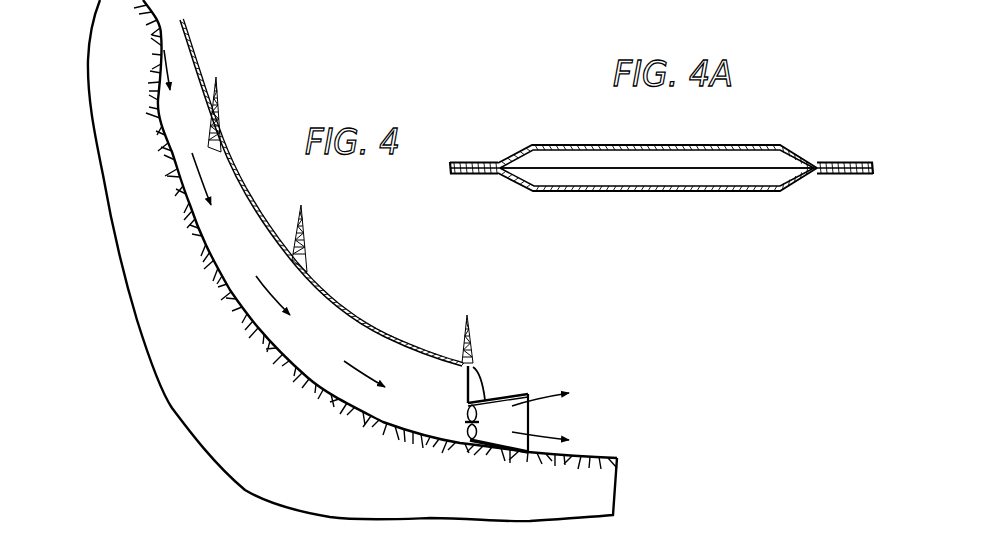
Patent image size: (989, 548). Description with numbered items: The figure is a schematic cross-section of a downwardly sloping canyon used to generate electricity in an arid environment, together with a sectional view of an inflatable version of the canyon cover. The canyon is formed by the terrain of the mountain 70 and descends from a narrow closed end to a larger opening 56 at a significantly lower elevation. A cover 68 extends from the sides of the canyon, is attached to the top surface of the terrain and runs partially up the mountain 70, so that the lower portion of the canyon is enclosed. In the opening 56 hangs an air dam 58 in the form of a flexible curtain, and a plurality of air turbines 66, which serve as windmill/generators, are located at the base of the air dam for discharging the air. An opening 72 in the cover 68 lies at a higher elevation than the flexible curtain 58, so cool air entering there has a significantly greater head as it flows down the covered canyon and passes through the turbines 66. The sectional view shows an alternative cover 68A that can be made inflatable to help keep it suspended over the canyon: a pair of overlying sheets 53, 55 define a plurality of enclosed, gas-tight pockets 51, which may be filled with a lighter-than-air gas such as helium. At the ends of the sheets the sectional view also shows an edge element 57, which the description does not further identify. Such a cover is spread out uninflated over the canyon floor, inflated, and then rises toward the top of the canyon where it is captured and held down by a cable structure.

In FIG. 4, the mountain 70 is at (94, 40).
In FIG. 4, the opening 72 is at (180, 70).
In FIG. 4, the cover 68 is at (252, 198).
In FIG. 4, the air dam 58 is at (467, 377).
In FIG. 4, the opening 56 is at (478, 388).
In FIG. 4, the air turbines 66 is at (483, 438).
In FIG. 4A, the cover 68A is at (593, 143).
In FIG. 4A, the overlying sheet 53 is at (697, 143).
In FIG. 4A, the overlying sheet 55 is at (693, 191).
In FIG. 4A, the gas-tight pocket 51 is at (667, 177).
In FIG. 4A, the anchoring cable 57 is at (830, 161).